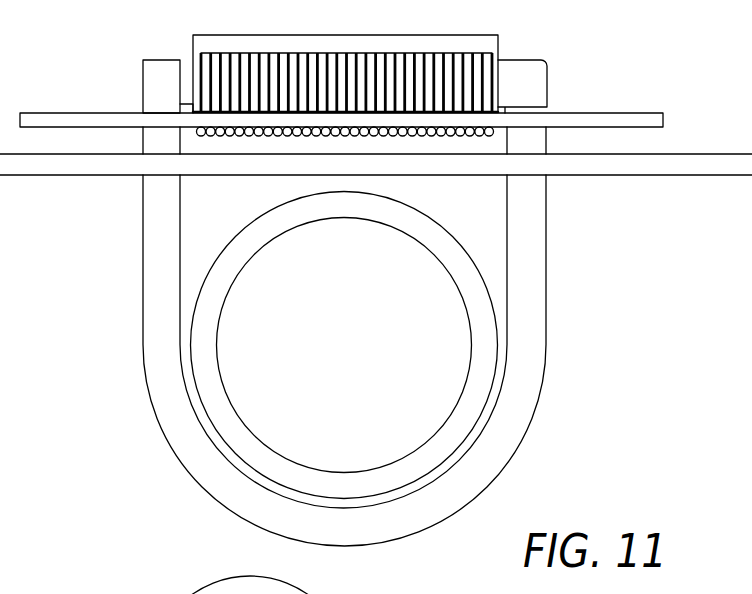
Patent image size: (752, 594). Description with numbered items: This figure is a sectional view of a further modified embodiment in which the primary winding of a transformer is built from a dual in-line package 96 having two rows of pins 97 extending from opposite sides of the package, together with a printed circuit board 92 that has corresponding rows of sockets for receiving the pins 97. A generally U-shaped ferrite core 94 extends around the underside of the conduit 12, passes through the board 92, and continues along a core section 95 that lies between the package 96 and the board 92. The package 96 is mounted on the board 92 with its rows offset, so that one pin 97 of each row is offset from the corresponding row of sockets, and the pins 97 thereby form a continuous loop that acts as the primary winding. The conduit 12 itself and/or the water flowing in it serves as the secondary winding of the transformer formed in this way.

The conduit 12 is at (482, 414).
The printed circuit board 92 is at (75, 138).
The U-shaped ferrite core 94 is at (546, 284).
The core section 95 is at (538, 85).
The dual in-line package 96 is at (205, 36).
The pins 97 is at (192, 79).